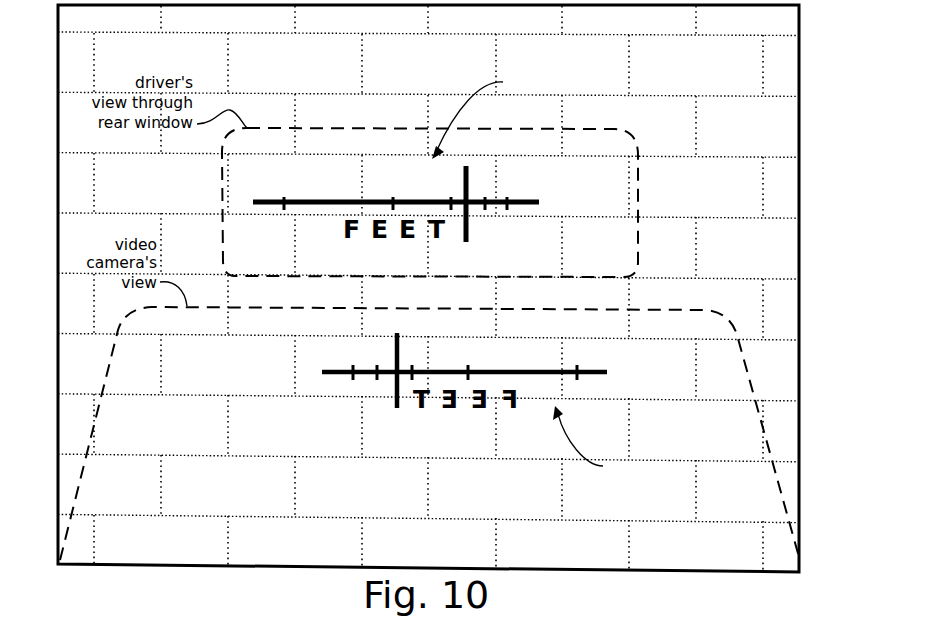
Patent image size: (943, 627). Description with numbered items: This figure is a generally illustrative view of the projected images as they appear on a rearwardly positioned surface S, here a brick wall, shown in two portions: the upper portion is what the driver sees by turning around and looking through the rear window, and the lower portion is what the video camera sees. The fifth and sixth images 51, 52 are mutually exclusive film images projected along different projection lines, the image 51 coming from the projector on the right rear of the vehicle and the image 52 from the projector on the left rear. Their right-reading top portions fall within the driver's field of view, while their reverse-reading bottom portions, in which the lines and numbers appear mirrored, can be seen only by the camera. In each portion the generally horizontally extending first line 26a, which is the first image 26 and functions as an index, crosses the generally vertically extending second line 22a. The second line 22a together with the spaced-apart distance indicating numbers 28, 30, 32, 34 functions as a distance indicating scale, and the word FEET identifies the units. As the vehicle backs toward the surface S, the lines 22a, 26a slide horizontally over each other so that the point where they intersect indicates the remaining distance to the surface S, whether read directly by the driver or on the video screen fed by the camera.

The first image 26 is at (284, 164).
The distance indicating number 28 is at (392, 162).
The distance indicating number 30 is at (451, 163).
The distance indicating number 32 is at (484, 164).
The distance indicating number 34 is at (519, 177).
The first line 26a is at (319, 205).
The second line 22a is at (468, 230).
The fifth image 51 is at (481, 114).
The sixth image 52 is at (595, 442).
The surface S is at (762, 130).